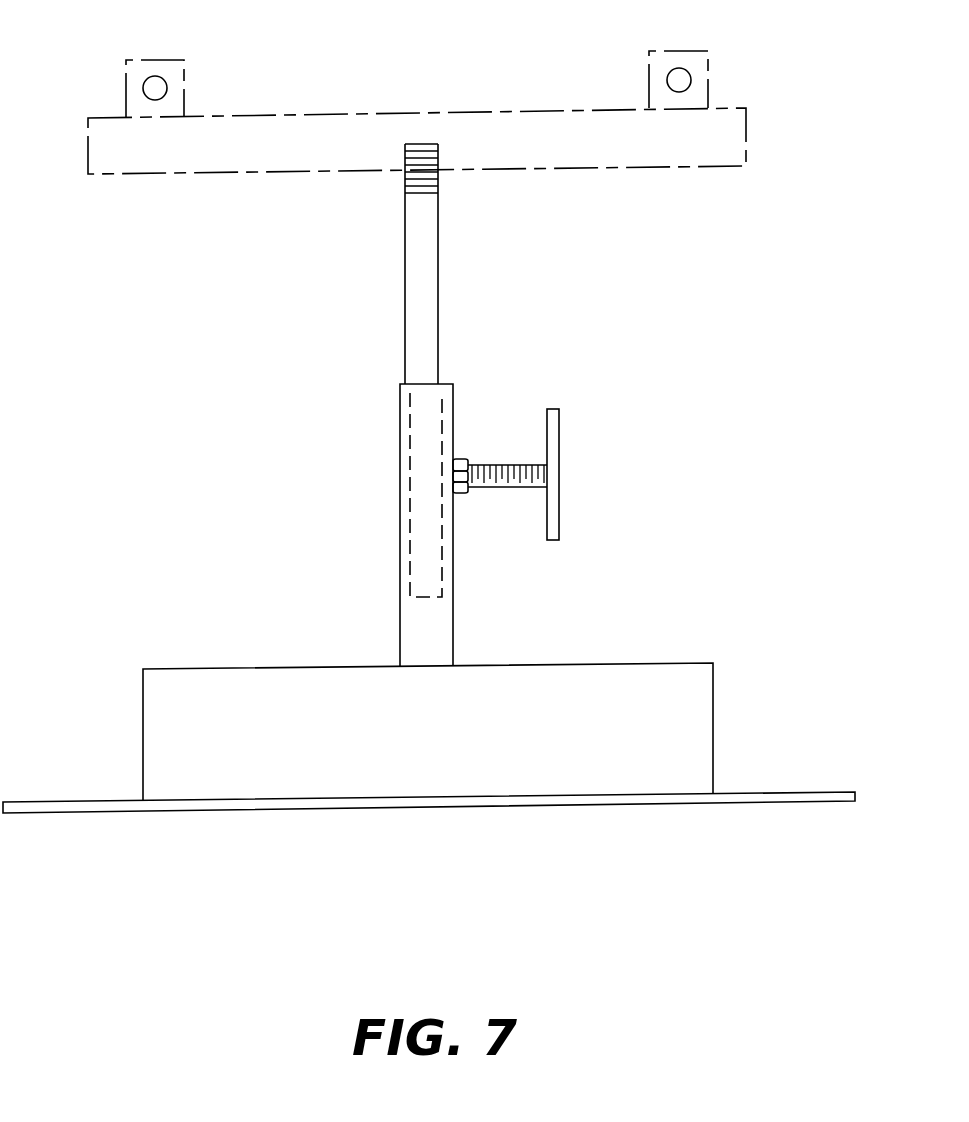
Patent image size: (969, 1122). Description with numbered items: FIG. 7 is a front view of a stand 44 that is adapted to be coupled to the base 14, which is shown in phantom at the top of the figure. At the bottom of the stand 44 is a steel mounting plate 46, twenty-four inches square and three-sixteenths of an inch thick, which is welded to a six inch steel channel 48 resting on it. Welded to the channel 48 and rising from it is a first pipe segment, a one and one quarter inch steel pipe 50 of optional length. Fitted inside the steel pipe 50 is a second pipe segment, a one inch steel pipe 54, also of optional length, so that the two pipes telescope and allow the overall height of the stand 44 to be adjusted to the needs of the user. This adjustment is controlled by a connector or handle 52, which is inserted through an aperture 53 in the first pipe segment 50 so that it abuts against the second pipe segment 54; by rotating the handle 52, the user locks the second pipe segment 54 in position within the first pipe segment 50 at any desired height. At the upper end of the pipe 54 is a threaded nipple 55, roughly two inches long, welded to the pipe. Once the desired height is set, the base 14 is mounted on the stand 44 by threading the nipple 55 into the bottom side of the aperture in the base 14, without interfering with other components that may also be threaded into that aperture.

The base 14 is at (489, 80).
The stand 44 is at (519, 405).
The steel mounting plate 46 is at (755, 797).
The steel channel 48 is at (700, 702).
The steel pipe 50 is at (437, 641).
The handle 52 is at (553, 448).
The aperture 53 is at (460, 457).
The steel pipe 54 is at (519, 264).
The nipple 55 is at (430, 185).